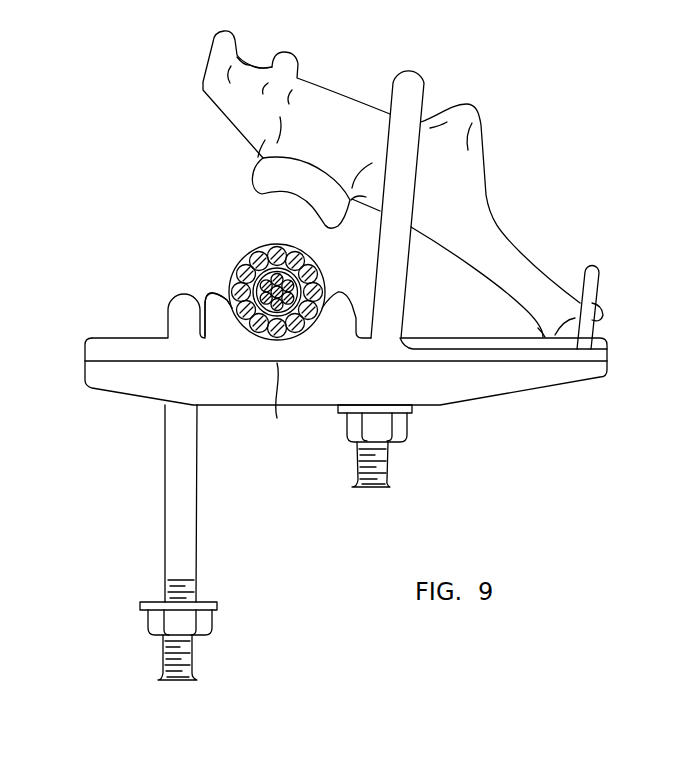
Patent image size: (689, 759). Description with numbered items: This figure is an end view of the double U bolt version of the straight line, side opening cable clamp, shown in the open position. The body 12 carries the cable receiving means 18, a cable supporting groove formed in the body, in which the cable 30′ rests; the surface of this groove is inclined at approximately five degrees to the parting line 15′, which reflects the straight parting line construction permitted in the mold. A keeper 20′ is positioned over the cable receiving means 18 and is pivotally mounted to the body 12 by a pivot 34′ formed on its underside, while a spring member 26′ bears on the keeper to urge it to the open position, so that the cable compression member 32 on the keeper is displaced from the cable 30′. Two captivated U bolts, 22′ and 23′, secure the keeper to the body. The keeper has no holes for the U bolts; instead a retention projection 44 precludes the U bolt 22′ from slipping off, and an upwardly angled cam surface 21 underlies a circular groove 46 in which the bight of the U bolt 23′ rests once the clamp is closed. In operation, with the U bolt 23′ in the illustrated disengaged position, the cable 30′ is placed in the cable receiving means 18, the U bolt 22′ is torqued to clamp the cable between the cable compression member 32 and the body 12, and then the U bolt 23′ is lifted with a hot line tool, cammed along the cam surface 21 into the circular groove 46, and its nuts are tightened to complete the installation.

The body 12 is at (80, 350).
The parting line 15′ is at (264, 406).
The cable receiving means 18 is at (228, 297).
The keeper 20′ is at (507, 203).
The cam surface 21 is at (269, 115).
The U bolt 22′ is at (417, 72).
The U bolt 23′ is at (197, 483).
The spring member 26′ is at (599, 274).
The cable 30′ is at (253, 247).
The cable compression member 32 is at (257, 173).
The pivot 34′ is at (543, 327).
The retention projection 44 is at (471, 105).
The circular groove 46 is at (257, 65).